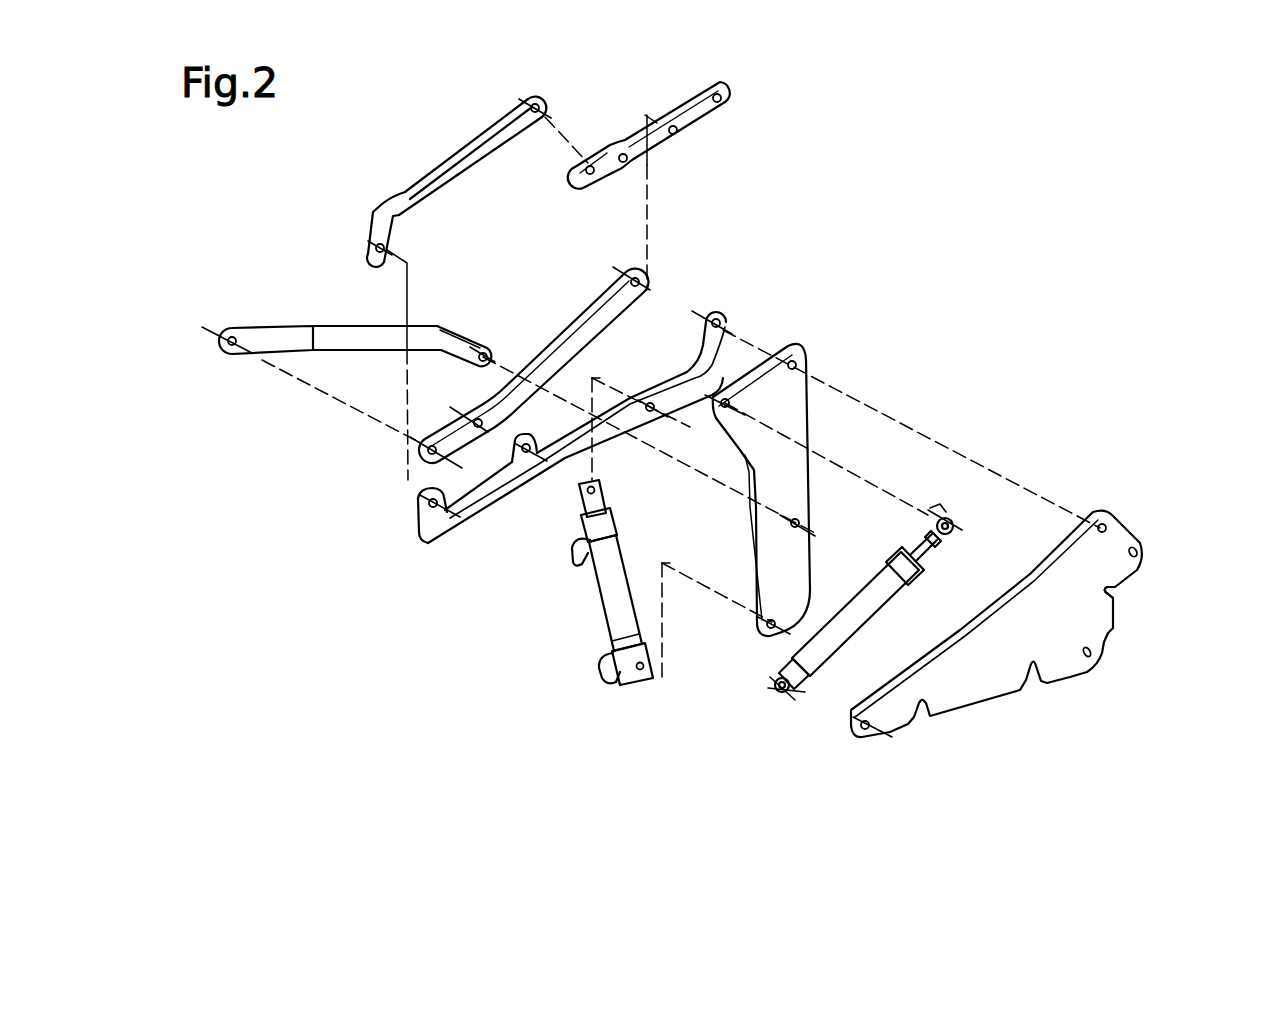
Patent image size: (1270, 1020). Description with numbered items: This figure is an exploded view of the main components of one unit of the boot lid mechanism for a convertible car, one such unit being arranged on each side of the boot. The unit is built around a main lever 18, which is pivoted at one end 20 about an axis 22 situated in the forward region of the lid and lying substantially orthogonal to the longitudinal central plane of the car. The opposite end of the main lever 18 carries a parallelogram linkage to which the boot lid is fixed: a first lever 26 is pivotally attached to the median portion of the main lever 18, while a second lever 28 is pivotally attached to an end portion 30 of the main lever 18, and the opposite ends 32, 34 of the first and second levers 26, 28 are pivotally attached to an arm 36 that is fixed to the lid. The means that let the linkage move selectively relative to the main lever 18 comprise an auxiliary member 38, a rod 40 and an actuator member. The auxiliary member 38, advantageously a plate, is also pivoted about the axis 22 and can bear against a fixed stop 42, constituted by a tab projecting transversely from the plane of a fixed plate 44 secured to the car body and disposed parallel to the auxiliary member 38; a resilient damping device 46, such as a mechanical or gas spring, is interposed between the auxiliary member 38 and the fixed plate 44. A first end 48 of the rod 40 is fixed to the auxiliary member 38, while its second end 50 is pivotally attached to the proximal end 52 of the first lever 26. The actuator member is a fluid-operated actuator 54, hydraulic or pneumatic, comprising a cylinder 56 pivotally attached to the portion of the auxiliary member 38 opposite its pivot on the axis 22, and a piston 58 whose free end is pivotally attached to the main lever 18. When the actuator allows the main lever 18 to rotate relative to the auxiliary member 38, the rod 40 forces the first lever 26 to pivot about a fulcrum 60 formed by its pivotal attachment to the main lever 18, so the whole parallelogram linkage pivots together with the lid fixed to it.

The main lever 18 is at (468, 525).
The end of the main lever 20 is at (722, 312).
The axis 22 is at (928, 432).
The first lever 26 is at (547, 330).
The second lever 28 is at (432, 166).
The end portion of the main lever 30 is at (371, 226).
The opposite end of the first lever 32 is at (648, 276).
The opposite end of the second lever 34 is at (541, 103).
The arm 36 is at (742, 92).
The auxiliary member 38 is at (814, 396).
The rod 40 is at (312, 316).
The fixed stop 42 is at (1120, 591).
The fixed plate 44 is at (1060, 543).
The resilient damping device 46 is at (763, 696).
The first end of the rod 48 is at (484, 346).
The second end of the rod 50 is at (228, 352).
The proximal end of the first lever 52 is at (410, 477).
The fluid-operated actuator 54 is at (592, 631).
The cylinder 56 is at (600, 611).
The piston 58 is at (580, 498).
The fulcrum 60 is at (537, 445).